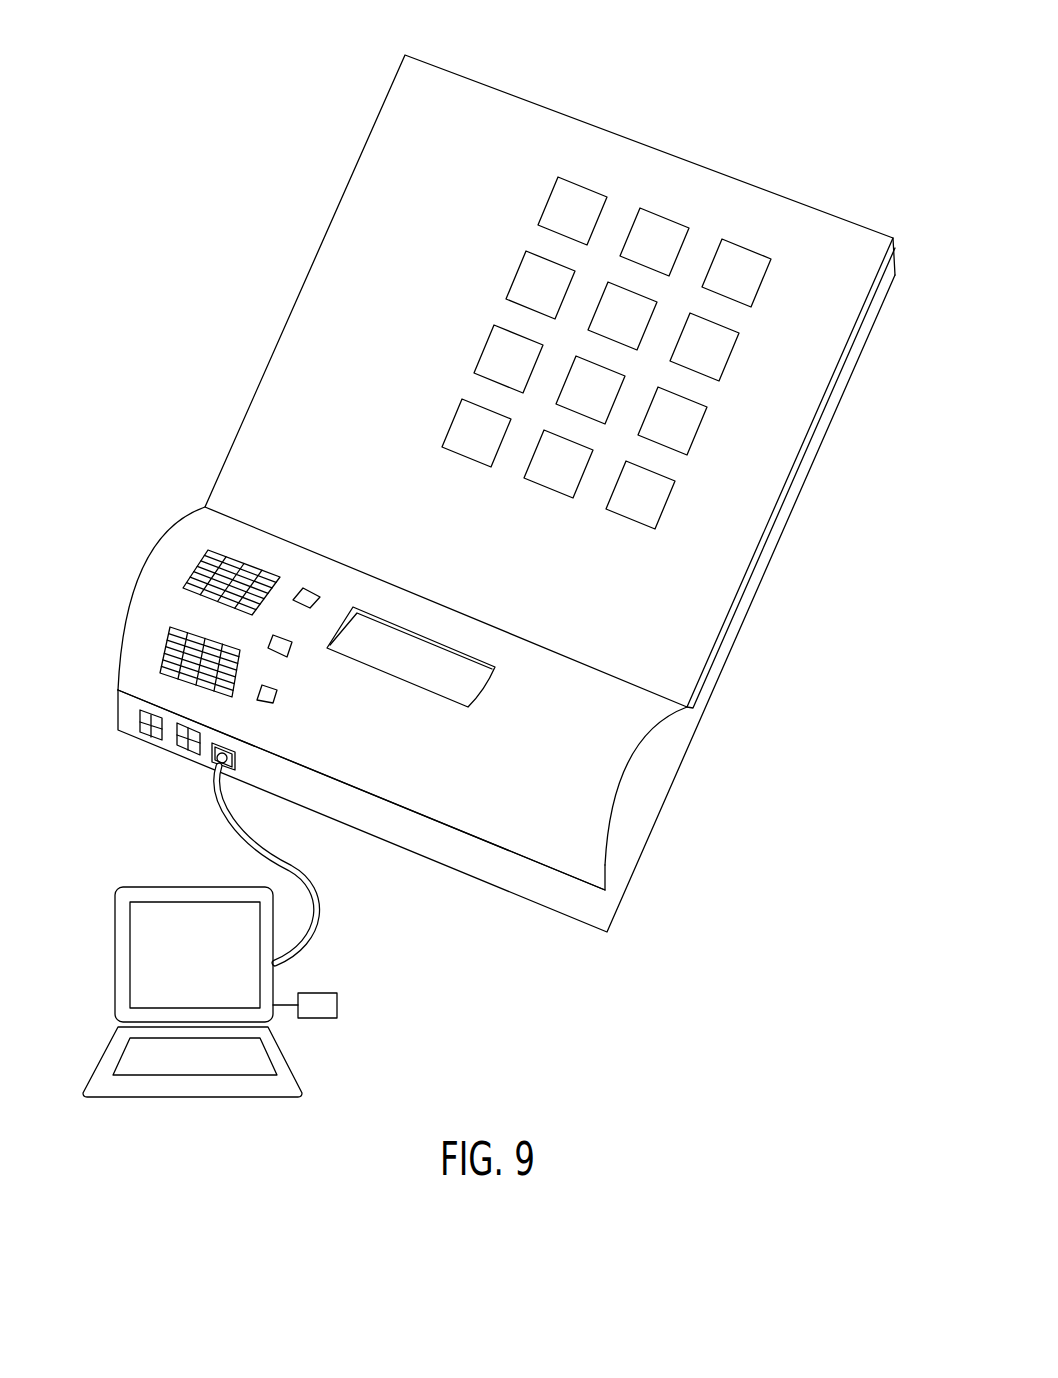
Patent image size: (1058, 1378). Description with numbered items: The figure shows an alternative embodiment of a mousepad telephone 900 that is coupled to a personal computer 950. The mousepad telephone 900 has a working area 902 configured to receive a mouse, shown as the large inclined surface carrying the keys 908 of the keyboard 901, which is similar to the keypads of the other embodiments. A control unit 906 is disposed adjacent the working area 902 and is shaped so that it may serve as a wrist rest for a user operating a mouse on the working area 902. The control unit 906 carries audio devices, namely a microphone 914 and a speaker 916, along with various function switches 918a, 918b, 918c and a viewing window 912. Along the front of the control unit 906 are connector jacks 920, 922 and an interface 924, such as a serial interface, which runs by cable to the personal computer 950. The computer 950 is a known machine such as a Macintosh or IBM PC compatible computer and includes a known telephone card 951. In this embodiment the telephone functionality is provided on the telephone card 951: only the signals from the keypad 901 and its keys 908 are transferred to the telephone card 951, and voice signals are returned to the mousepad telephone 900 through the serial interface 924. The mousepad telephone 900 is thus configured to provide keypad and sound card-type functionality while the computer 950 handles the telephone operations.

The mousepad telephone 900 is at (614, 50).
The keyboard 901 is at (788, 483).
The working area 902 is at (708, 167).
The control unit 906 is at (500, 815).
The keys 908 is at (490, 312).
The viewing window 912 is at (438, 640).
The microphone 914 is at (243, 562).
The speaker 916 is at (163, 638).
The function switch 918a is at (308, 590).
The function switch 918b is at (288, 650).
The function switch 918c is at (278, 698).
The connector port 920 is at (148, 727).
The connector port 922 is at (183, 747).
The interface 924 is at (228, 773).
The personal computer 950 is at (293, 1062).
The telephone card 951 is at (323, 990).